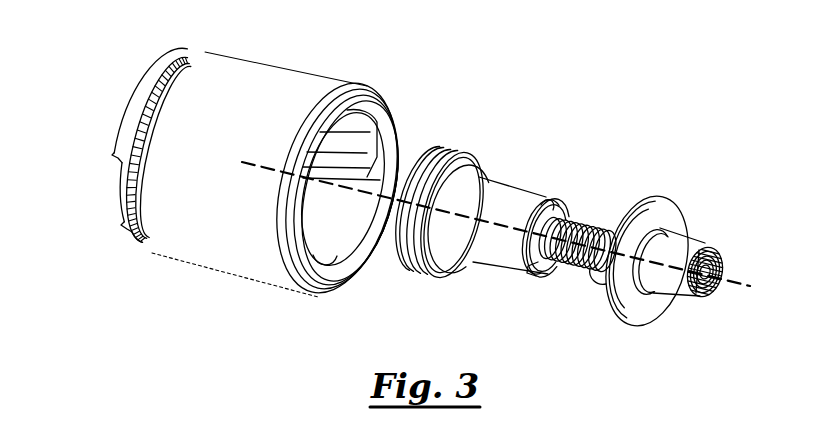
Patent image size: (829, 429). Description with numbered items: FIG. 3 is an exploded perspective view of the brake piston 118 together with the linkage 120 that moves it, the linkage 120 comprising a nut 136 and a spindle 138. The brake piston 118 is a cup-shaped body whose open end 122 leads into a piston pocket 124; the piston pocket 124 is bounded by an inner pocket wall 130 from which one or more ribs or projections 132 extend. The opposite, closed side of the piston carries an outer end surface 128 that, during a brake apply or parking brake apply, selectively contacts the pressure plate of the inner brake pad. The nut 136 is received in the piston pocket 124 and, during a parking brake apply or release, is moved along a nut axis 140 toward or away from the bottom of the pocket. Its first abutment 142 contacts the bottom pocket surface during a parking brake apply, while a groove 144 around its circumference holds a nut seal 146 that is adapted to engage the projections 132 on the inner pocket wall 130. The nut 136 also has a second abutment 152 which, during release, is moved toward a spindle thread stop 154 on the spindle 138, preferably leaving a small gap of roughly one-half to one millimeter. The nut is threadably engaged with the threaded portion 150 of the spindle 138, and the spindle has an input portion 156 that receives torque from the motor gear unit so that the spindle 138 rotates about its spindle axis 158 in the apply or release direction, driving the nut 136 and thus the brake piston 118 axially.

The brake piston 118 is at (215, 149).
The linkage 120 is at (610, 250).
The open end 122 is at (345, 192).
The piston pocket 124 is at (343, 214).
The outer end surface 128 is at (127, 145).
The inner pocket wall 130 is at (356, 228).
The ribs or projections 132 is at (362, 213).
The nut 136 is at (516, 199).
The spindle 138 is at (654, 236).
The nut axis 140 is at (694, 294).
The first abutment 142 is at (420, 192).
The groove 144 is at (451, 182).
The nut seal 146 is at (467, 180).
The threaded portion 150 is at (577, 274).
The second abutment 152 is at (560, 219).
The spindle thread stop 154 is at (603, 322).
The input portion 156 is at (716, 248).
The spindle axis 158 is at (714, 316).